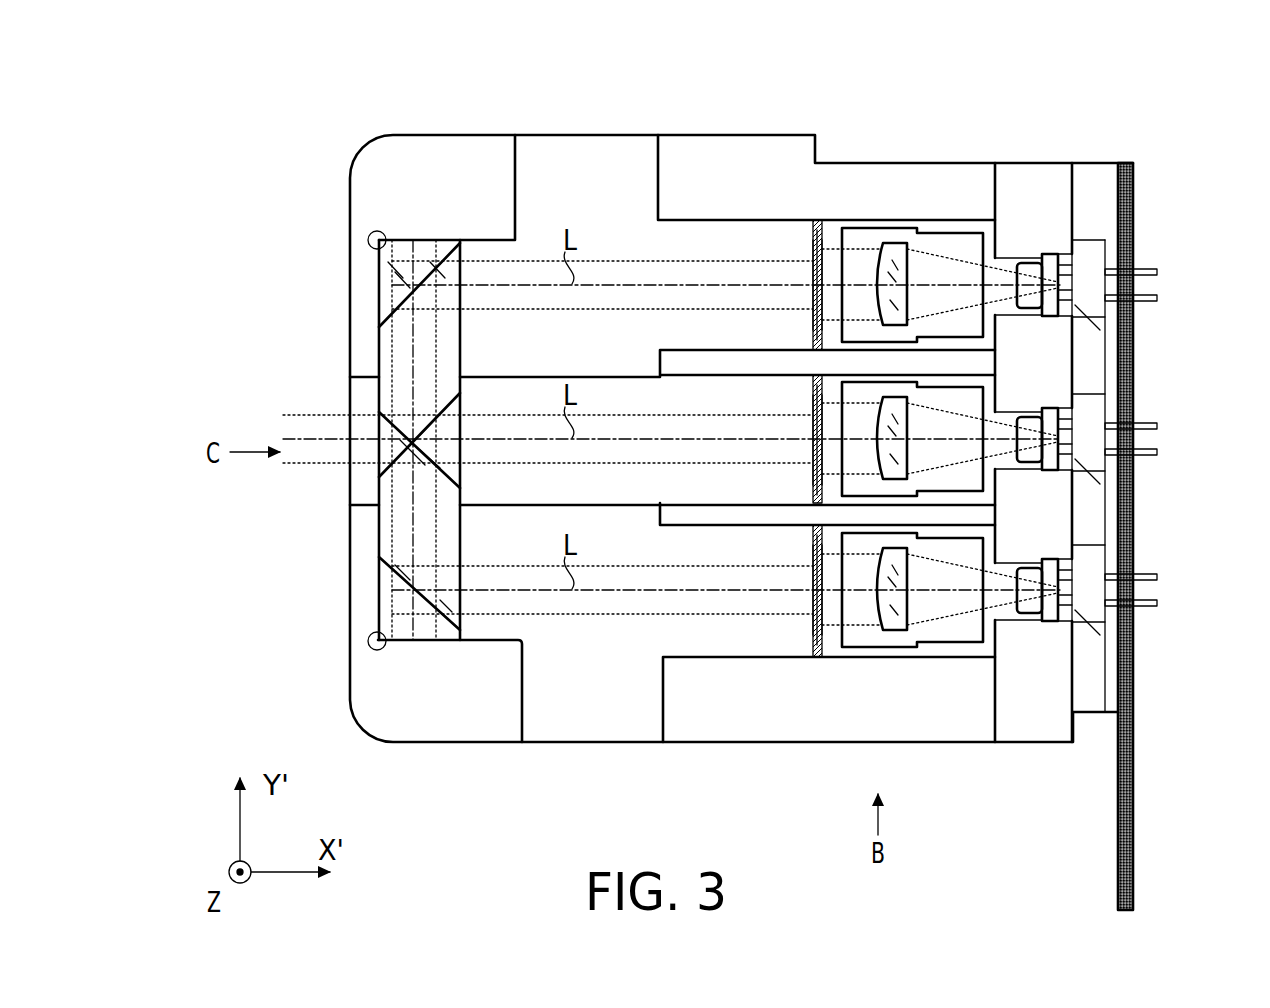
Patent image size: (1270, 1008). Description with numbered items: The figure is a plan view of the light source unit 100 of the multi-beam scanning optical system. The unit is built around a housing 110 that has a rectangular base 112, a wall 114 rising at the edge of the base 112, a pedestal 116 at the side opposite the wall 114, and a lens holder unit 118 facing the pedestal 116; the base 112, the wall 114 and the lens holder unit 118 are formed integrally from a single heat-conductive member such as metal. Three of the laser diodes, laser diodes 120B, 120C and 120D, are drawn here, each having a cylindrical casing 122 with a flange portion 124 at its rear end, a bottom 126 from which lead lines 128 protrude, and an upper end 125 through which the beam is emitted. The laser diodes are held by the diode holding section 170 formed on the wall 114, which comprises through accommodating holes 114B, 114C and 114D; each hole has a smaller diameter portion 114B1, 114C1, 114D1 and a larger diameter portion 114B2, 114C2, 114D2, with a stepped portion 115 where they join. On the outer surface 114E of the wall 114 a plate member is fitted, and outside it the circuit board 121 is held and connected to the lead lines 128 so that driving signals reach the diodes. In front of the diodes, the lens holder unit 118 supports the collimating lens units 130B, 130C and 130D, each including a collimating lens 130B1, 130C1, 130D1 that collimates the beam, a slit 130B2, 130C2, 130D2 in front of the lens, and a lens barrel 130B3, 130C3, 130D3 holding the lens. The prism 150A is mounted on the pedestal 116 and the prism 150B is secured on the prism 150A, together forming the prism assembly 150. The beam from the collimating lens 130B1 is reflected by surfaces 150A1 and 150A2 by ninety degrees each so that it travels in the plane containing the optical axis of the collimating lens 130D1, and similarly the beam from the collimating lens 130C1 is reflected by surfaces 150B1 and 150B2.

The light source unit 100 is at (980, 95).
The housing 110 is at (740, 744).
The rectangular base 112 is at (580, 743).
The wall 114 is at (1046, 172).
The accommodating hole 114B is at (1000, 625).
The smaller diameter portion 114B1 is at (1006, 615).
The larger diameter portion 114B2 is at (1100, 635).
The accommodating hole 114C is at (1000, 320).
The smaller diameter portion 114C1 is at (1006, 310).
The larger diameter portion 114C2 is at (1100, 330).
The accommodating hole 114D is at (1000, 474).
The smaller diameter portion 114D1 is at (1006, 464).
The larger diameter portion 114D2 is at (1100, 484).
The outer surface 114E is at (1075, 744).
The stepped portion 115 is at (1075, 278).
The pedestal 116 is at (455, 148).
The lens holder unit 118 is at (920, 650).
The laser diode 120B is at (917, 643).
The laser diode 120C is at (917, 338).
The laser diode 120D is at (917, 492).
The circuit board 121 is at (1158, 553).
The cylindrical casing 122 is at (1020, 262).
The flange portion 124 is at (1050, 254).
The upper end 125 is at (1013, 263).
The bottom 126 is at (1107, 320).
The lead lines 128 is at (1160, 297).
The collimating lens unit 130B is at (834, 545).
The collimating lens 130B1 is at (873, 593).
The slit 130B2 is at (863, 648).
The lens barrel 130B3 is at (807, 578).
The collimating lens unit 130C is at (834, 240).
The collimating lens 130C1 is at (873, 288).
The slit 130C2 is at (857, 240).
The lens barrel 130C3 is at (807, 275).
The collimating lens unit 130D is at (834, 394).
The collimating lens 130D1 is at (873, 442).
The slit 130D2 is at (853, 432).
The lens barrel 130D3 is at (807, 428).
The cross dichroic prism 150 is at (1095, 375).
The prism 150A is at (374, 598).
The reflecting surface 150A1 is at (468, 642).
The reflecting surface 150A2 is at (432, 486).
The prism 150B is at (374, 292).
The reflecting surface 150B1 is at (465, 240).
The reflecting surface 150B2 is at (423, 420).
The diode holding section 170 is at (1066, 193).